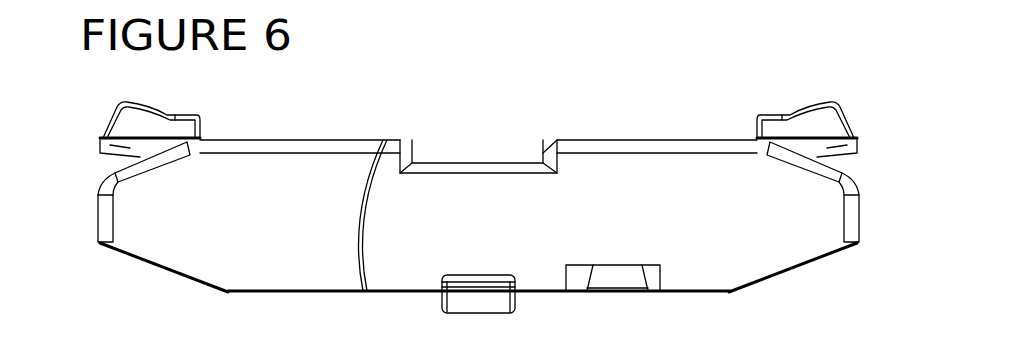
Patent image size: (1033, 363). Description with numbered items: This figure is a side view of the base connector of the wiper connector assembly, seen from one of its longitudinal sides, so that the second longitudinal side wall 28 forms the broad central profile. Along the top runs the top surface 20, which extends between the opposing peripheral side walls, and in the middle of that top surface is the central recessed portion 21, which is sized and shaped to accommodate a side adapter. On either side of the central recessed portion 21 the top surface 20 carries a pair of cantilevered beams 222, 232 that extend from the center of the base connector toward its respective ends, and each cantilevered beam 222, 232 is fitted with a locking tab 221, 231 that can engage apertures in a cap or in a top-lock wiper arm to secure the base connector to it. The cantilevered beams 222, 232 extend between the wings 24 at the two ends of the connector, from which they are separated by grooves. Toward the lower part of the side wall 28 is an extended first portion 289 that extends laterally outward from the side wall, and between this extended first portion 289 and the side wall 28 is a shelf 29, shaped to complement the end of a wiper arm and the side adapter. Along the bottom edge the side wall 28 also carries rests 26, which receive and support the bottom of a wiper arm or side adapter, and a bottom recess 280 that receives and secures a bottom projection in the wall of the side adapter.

The top surface 20 is at (318, 137).
The central recessed portion 21 is at (480, 162).
The wings 24 is at (108, 212).
The rests 26 is at (483, 302).
The second longitudinal side wall 28 is at (722, 235).
The shelf 29 is at (365, 220).
The locking tab 221 is at (828, 122).
The cantilevered beam 222 is at (847, 150).
The locking tab 231 is at (135, 123).
The cantilevered beam 232 is at (132, 148).
The bottom recess 280 is at (613, 267).
The extended first portion 289 is at (237, 227).